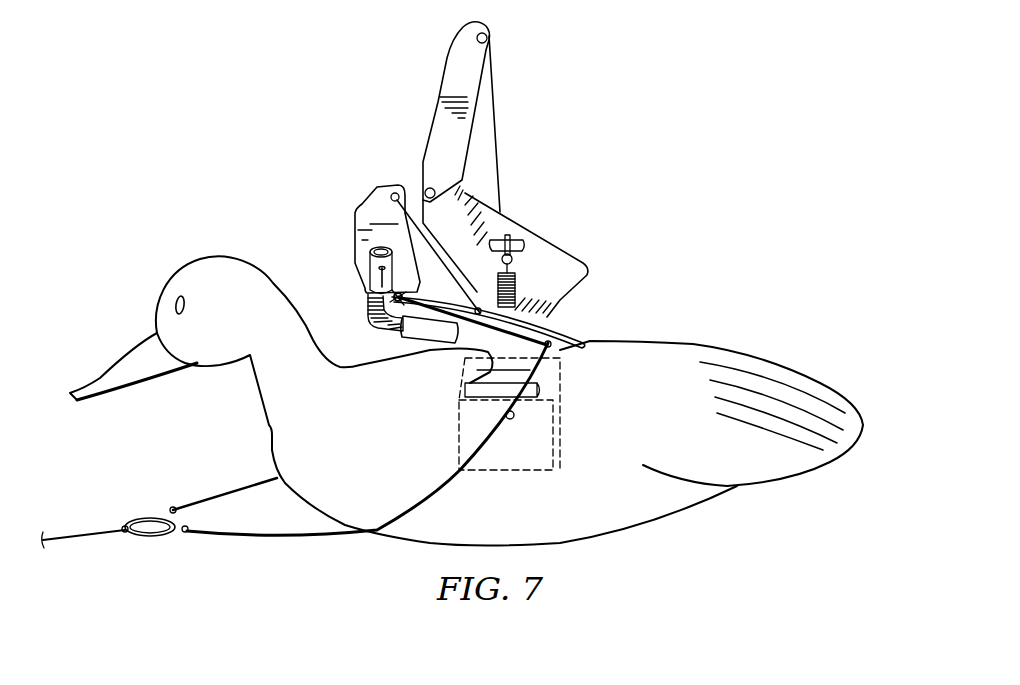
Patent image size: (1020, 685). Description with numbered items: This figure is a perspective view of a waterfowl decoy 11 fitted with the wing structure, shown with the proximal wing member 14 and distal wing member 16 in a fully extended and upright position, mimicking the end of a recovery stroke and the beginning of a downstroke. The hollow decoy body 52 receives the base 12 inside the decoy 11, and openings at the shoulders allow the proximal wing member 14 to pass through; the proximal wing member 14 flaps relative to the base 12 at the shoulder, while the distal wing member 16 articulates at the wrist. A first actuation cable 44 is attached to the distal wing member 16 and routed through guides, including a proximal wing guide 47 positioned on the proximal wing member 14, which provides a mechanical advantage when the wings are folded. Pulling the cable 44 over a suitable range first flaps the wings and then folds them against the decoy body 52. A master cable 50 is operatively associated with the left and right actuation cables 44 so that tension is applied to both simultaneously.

The waterfowl decoy 11 is at (515, 207).
The base 12 is at (515, 458).
The proximal wing member 14 is at (552, 240).
The distal wing member 16 is at (443, 75).
The first actuation cable 44 is at (275, 540).
The proximal wing guide 47 is at (565, 352).
The master cable 50 is at (78, 540).
The decoy body 52 is at (638, 343).